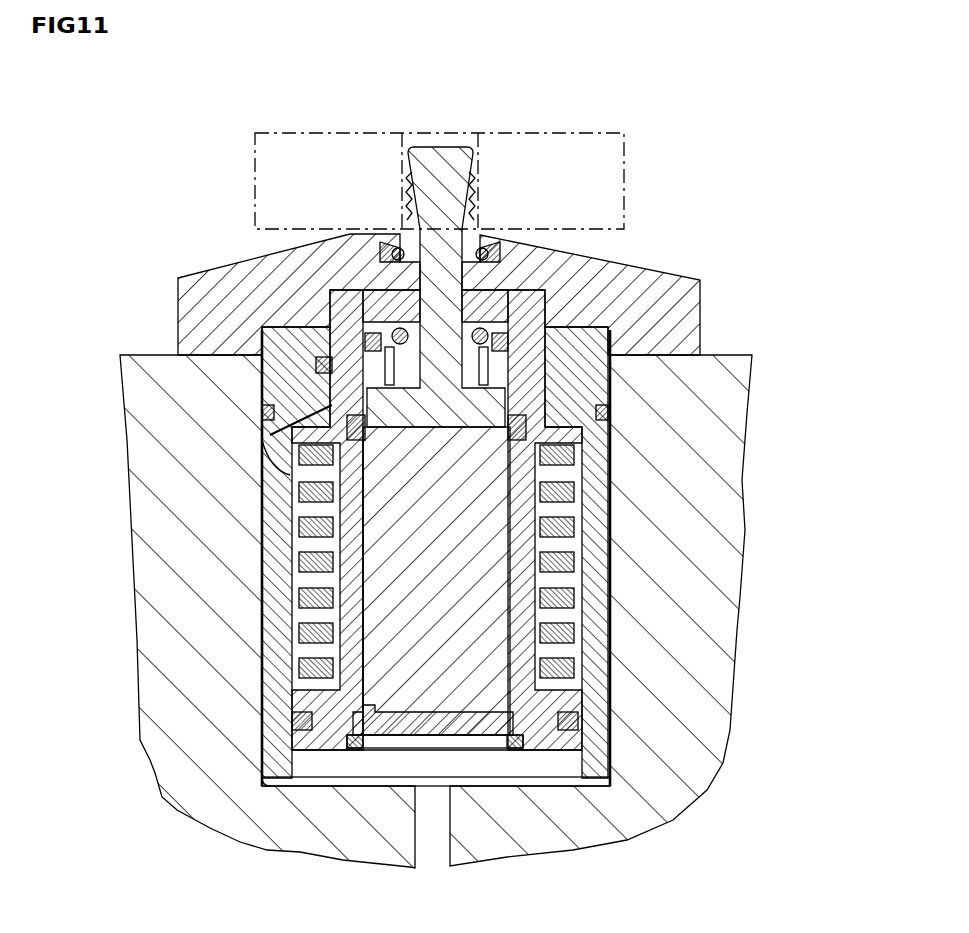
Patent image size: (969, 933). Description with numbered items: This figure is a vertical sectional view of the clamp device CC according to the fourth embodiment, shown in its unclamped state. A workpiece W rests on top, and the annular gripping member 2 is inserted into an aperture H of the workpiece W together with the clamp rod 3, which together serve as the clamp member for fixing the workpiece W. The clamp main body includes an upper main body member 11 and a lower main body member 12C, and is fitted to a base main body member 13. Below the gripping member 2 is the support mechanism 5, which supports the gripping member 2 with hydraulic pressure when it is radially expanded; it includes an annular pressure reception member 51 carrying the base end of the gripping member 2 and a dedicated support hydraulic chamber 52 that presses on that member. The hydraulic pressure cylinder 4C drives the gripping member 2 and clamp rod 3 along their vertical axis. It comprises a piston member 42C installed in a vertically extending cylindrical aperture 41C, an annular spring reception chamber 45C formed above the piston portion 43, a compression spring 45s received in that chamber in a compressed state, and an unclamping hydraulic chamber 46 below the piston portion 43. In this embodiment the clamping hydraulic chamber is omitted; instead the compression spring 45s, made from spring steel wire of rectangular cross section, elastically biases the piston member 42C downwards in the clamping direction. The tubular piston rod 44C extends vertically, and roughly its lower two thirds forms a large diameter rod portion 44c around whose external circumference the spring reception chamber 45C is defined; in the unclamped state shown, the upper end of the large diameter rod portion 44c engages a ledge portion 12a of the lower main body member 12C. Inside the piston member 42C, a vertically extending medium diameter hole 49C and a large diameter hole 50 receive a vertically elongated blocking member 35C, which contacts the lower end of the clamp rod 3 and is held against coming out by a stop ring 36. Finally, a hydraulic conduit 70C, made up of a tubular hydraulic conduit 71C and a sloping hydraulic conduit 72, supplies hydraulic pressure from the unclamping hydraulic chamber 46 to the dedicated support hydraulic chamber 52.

The clamp rod 3 is at (457, 144).
The gripping member 2 is at (480, 203).
The workpiece W is at (255, 171).
The aperture H is at (402, 154).
The clamp device CC is at (205, 250).
The upper main body member 11 is at (178, 314).
The annular pressure reception member 51 is at (530, 280).
The dedicated support hydraulic chamber 52 is at (540, 312).
The support mechanism 5 is at (708, 220).
The base main body member 13 is at (713, 440).
The ledge portion 12a is at (598, 414).
The lower main body member 12C is at (272, 573).
The sloping hydraulic conduit 72 is at (270, 470).
The tubular hydraulic conduit 71C is at (268, 512).
The hydraulic conduit 70C is at (218, 470).
The annular spring reception chamber 45C is at (570, 622).
The compression spring 45s is at (574, 510).
The tubular piston rod 44C is at (368, 514).
The large diameter rod portion 44c is at (352, 588).
The blocking member 35C is at (390, 595).
The medium diameter hole 49C is at (507, 443).
The large diameter hole 50 is at (492, 720).
The stop ring 36 is at (522, 748).
The piston member 42C is at (536, 757).
The cylindrical aperture 41C is at (558, 757).
The unclamping hydraulic chamber 46 is at (472, 765).
The hydraulic pressure cylinder 4C is at (360, 762).
The piston portion 43 is at (287, 778).